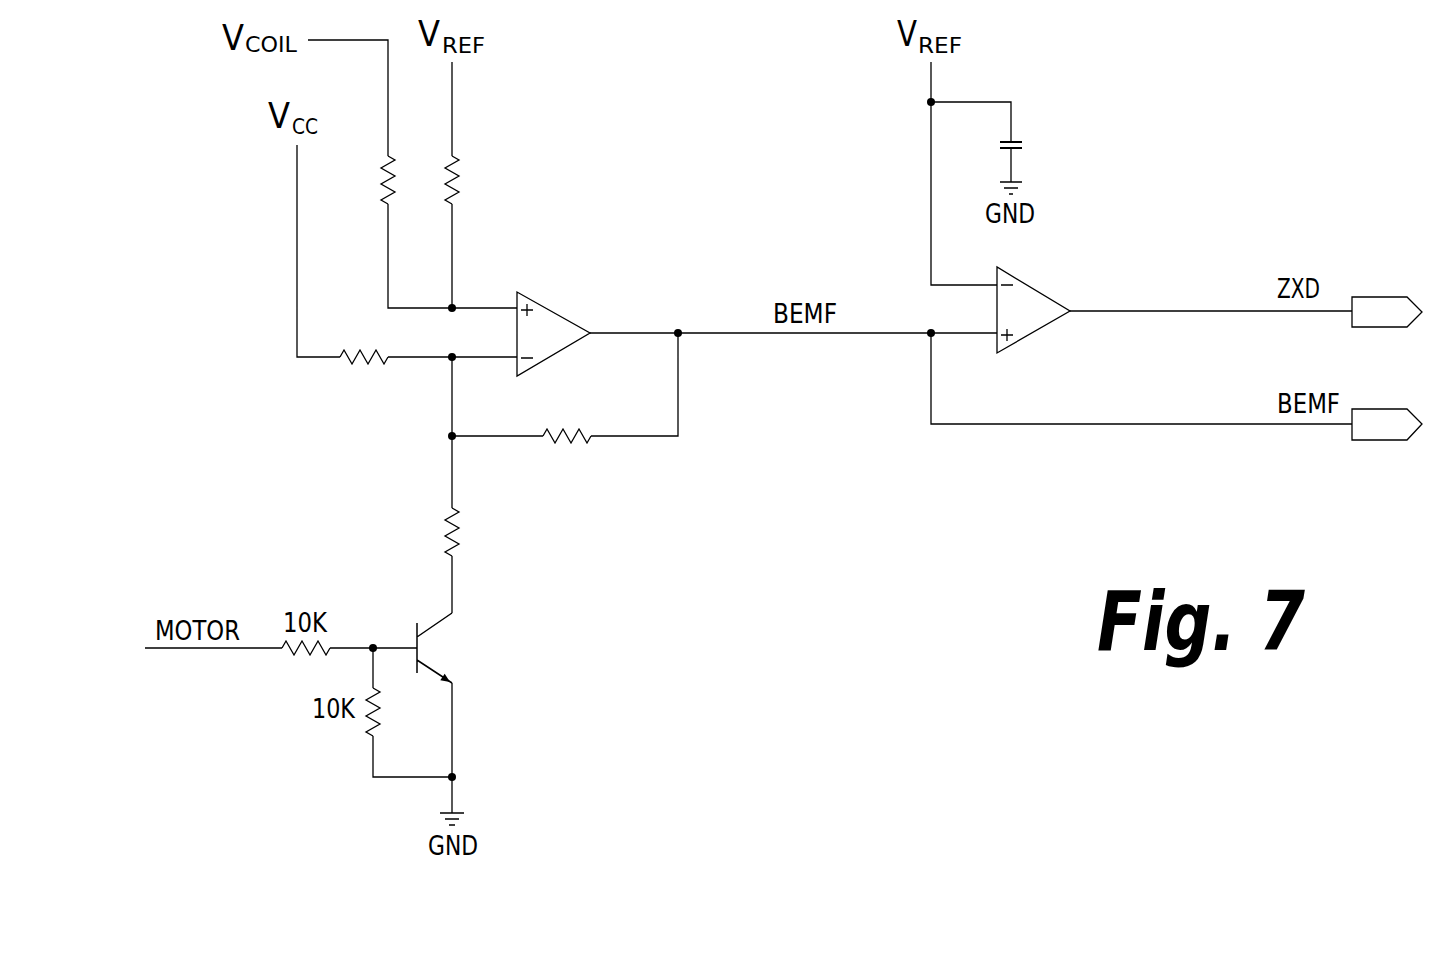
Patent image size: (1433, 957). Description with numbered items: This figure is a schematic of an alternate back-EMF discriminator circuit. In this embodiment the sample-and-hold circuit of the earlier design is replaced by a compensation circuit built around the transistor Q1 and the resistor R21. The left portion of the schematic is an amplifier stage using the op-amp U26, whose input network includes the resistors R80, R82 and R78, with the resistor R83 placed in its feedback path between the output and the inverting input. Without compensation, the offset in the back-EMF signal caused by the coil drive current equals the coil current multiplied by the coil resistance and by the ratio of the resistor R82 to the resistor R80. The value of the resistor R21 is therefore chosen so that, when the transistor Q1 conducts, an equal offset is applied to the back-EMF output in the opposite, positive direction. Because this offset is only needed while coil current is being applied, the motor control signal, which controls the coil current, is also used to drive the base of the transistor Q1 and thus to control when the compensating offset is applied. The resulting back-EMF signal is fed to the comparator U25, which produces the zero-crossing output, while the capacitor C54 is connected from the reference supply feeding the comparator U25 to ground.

The resistor R80 is at (354, 181).
The resistor R82 is at (487, 181).
The resistor R78 100K R78 is at (365, 357).
The feedback resistor R83 750K R83 is at (565, 436).
The resistor R21 is at (477, 534).
The operational amplifier U26 LMV921 U26 is at (568, 333).
The comparator U25 LMV331 U25 is at (1044, 313).
The capacitor C54 .01uF C54 is at (1047, 131).
The transistor Q1 is at (598, 636).